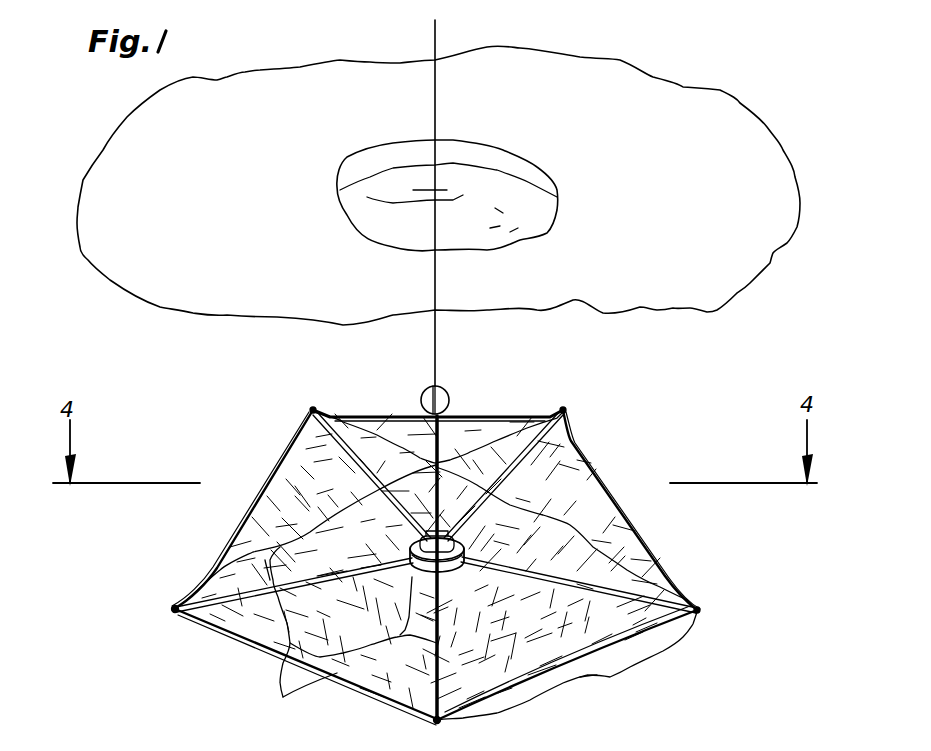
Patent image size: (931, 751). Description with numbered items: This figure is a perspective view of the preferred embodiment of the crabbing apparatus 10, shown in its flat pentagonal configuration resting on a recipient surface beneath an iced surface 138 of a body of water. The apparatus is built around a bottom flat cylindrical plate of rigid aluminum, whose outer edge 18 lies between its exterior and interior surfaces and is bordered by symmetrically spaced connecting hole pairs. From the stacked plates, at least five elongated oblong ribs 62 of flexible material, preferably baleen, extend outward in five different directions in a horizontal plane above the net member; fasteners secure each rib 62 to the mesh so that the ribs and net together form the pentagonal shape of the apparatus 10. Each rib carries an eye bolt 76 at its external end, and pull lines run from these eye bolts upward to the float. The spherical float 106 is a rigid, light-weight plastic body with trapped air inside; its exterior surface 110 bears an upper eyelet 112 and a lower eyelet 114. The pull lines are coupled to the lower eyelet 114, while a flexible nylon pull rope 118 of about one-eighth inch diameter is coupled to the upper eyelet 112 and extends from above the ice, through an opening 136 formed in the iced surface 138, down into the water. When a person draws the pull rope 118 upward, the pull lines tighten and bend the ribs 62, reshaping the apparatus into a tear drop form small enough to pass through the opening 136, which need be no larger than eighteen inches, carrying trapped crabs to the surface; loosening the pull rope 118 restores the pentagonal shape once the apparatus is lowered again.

The crabbing apparatus 10 is at (420, 563).
The outer edge 18 is at (397, 637).
The elongated oblong rib 62 is at (283, 697).
The eye bolt 76 is at (590, 676).
The spherical float 106 is at (420, 400).
The exterior surface 110 is at (446, 392).
The upper eyelet 112 is at (436, 386).
The lower eyelet 114 is at (453, 410).
The pull rope 118 is at (437, 52).
The opening 136 is at (523, 197).
The iced surface 138 is at (700, 122).